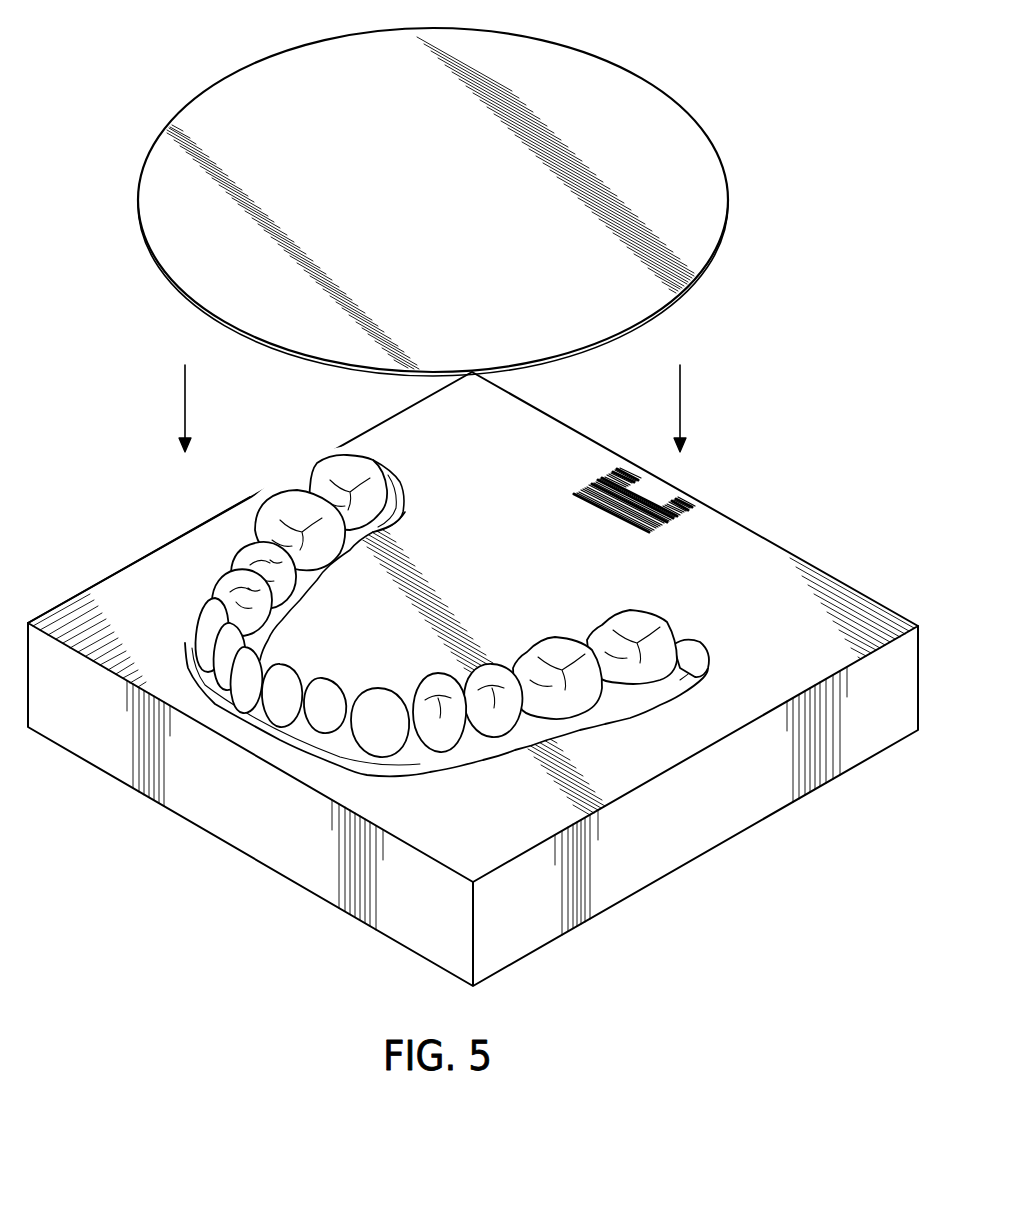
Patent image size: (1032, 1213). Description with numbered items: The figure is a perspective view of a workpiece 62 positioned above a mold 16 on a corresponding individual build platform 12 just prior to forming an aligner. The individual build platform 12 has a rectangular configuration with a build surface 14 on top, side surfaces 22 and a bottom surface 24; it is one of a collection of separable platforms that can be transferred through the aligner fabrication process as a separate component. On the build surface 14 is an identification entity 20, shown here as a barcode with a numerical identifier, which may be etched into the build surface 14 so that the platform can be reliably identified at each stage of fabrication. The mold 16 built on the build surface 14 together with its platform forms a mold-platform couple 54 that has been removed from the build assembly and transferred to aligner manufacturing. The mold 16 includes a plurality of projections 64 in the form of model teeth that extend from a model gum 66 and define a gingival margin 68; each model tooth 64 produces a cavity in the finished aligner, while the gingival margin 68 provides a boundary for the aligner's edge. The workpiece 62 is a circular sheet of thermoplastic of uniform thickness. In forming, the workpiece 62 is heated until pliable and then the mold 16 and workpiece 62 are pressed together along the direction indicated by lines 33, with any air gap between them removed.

The individual build platform 12 is at (153, 555).
The build surface 14 is at (520, 566).
The mold 16 is at (461, 727).
The identification entity 20 is at (604, 486).
The side surface 22 is at (860, 736).
The bottom surface 24 is at (303, 893).
The lines indicating pressing direction 33 is at (185, 402).
The mold-platform couple 54 is at (113, 574).
The workpiece 62 is at (630, 63).
The projections (model teeth) 64 is at (288, 497).
The model gum 66 is at (433, 760).
The gingival margin 68 is at (613, 697).